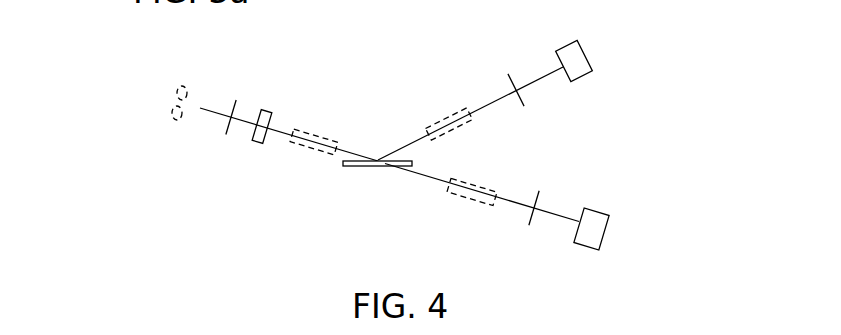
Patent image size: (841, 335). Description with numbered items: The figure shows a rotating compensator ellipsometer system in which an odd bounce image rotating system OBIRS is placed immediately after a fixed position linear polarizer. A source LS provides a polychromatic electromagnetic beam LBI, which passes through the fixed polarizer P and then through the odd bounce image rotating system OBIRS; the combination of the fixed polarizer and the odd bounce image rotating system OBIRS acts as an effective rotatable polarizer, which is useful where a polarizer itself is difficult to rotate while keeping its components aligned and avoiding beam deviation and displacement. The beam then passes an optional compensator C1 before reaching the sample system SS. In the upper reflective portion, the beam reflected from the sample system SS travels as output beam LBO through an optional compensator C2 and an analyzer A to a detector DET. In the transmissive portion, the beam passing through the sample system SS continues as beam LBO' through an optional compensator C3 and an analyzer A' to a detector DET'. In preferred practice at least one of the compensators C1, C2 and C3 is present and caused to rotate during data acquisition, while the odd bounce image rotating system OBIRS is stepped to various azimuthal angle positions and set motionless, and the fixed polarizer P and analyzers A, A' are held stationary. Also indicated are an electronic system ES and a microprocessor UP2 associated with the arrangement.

The light source LS is at (179, 92).
The electromagnetic beam LBI is at (245, 136).
The polarizer P is at (236, 104).
The odd bounce image rotating system OBIRS is at (316, 96).
The optional compensator C1 is at (279, 166).
The sample system SS is at (350, 196).
The electromagnetic beam LBO is at (441, 113).
The second output light beam LBO' is at (466, 201).
The optional compensator C2 is at (490, 139).
The analyzer A is at (522, 100).
The detector DET is at (614, 48).
The optional compensator C3 is at (436, 227).
The analyzer A' is at (528, 222).
The detector DET' is at (557, 252).
The electronic system ES is at (761, 25).
The microprocessor UP2 is at (704, 309).